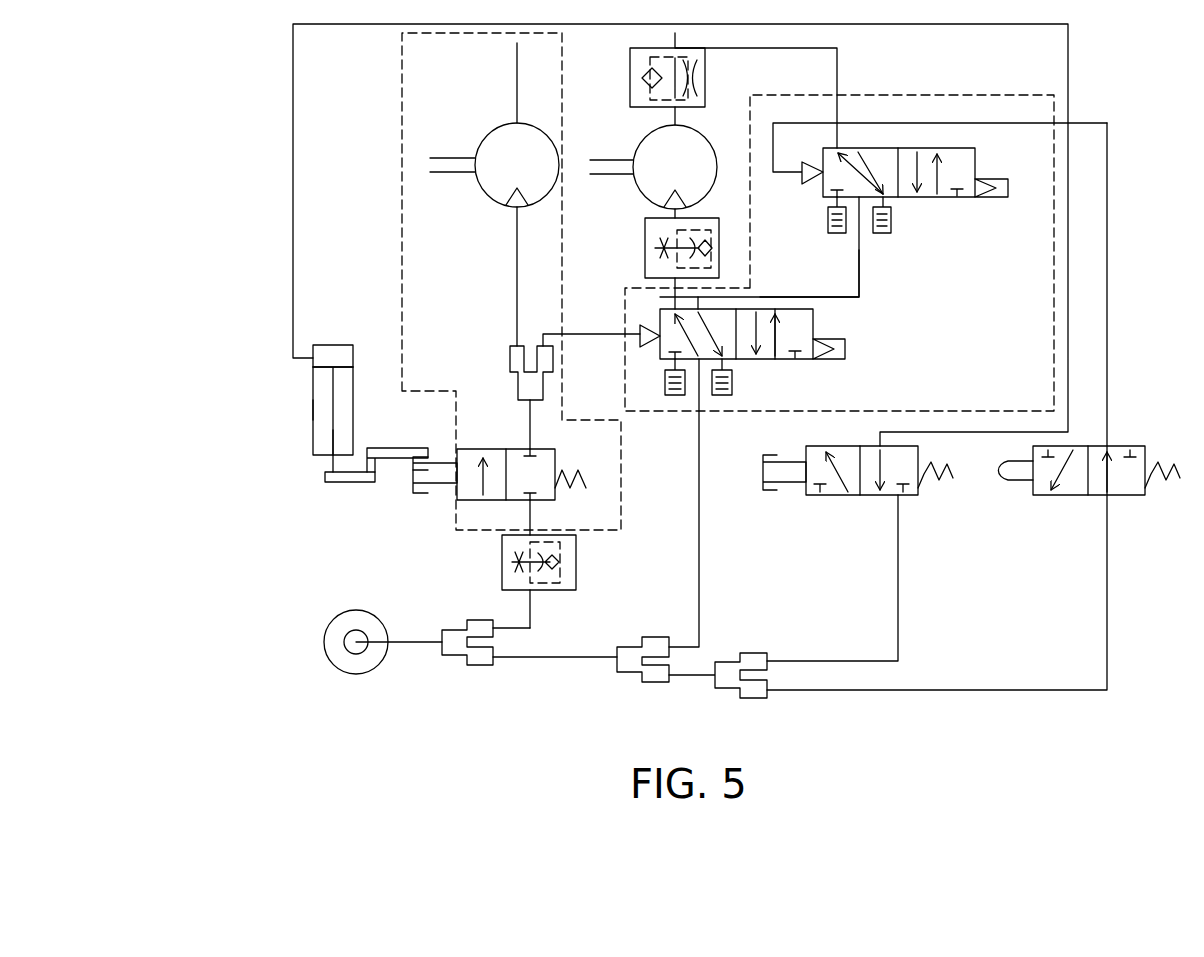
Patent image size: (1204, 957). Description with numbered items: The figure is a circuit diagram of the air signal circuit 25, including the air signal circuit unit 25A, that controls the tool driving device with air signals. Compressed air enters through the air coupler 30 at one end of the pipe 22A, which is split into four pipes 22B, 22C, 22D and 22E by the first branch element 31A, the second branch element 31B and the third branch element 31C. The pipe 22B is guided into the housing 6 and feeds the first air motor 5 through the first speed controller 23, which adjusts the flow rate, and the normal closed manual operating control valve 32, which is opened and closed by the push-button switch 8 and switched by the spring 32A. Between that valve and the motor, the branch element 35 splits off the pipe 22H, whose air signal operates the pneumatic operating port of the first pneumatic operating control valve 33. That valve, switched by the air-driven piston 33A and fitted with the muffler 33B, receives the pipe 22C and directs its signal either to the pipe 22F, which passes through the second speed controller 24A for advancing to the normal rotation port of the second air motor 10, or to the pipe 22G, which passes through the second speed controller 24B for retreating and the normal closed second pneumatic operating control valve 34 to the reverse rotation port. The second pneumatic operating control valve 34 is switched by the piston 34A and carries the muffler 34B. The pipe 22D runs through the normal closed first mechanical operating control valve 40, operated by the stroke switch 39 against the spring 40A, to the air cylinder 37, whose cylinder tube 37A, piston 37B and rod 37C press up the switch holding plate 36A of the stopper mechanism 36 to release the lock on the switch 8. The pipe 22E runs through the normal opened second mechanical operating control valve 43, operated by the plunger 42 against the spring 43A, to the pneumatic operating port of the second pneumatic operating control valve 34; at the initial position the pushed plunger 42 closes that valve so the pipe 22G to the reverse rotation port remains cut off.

The first air motor 5 is at (482, 150).
The housing 6 is at (402, 172).
The switch 8 is at (405, 478).
The second air motor 10 is at (633, 152).
The first speed controller 23 is at (578, 552).
The second speed controller for advancing 24A is at (645, 247).
The second speed controller for retreating 24B is at (705, 82).
The air signal circuit 25 is at (232, 150).
The air signal circuit unit 25A is at (1020, 76).
The air coupler 30 is at (370, 613).
The first branch element 31A is at (475, 618).
The second branch element 31B is at (648, 636).
The third branch element 31C is at (757, 652).
The manual operating control valve 32 is at (500, 449).
The spring 32A is at (582, 482).
The first pneumatic operating control valve 33 is at (790, 360).
The piston 33A is at (847, 352).
The muffler 33B is at (735, 385).
The second pneumatic operating control valve 34 is at (932, 197).
The piston 34A is at (990, 198).
The muffler 34B is at (828, 220).
The branch element 35 is at (510, 360).
The stopper mechanism 36 is at (328, 486).
The switch holding plate 36A is at (400, 450).
The air cylinder 37 is at (215, 352).
The cylinder tube 37A is at (313, 410).
The piston 37B is at (313, 372).
The rod 37C is at (313, 440).
The stroke switch 39 is at (763, 471).
The first mechanical operating control valve 40 is at (850, 496).
The spring 40A is at (938, 492).
The plunger 42 is at (1012, 472).
The second mechanical operating control valve 43 is at (1060, 496).
The spring 43A is at (1165, 492).
The pipe 22A is at (412, 640).
The pipe 22B is at (535, 628).
The pipe 22C is at (702, 540).
The pipe 22D is at (900, 592).
The pipe 22E is at (1107, 600).
The pipe 22F is at (670, 300).
The pipe 22G is at (862, 292).
The pipe 22H is at (580, 338).